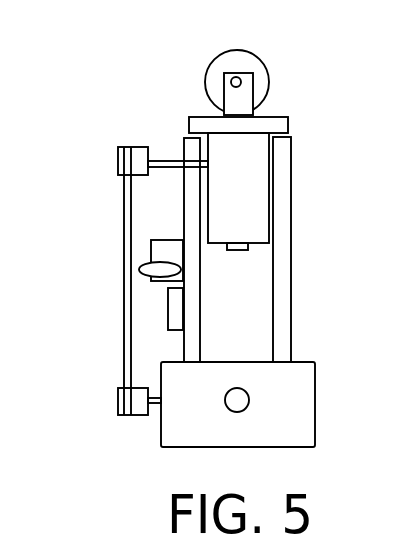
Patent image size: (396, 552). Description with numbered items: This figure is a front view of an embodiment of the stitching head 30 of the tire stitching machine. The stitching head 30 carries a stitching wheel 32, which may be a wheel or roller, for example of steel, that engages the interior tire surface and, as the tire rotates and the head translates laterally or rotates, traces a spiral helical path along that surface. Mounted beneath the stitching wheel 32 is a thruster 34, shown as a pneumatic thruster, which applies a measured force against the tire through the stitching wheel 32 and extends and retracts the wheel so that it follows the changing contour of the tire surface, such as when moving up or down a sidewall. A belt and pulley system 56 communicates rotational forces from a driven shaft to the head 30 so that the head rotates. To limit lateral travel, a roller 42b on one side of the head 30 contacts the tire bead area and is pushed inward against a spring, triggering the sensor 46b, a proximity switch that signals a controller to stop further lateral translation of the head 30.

The stitching head 30 is at (102, 76).
The stitching wheel 32 is at (213, 77).
The thruster 34 is at (248, 183).
The belt and pulley system 56 is at (122, 190).
The roller 42b is at (148, 268).
The sensor 46b is at (170, 312).